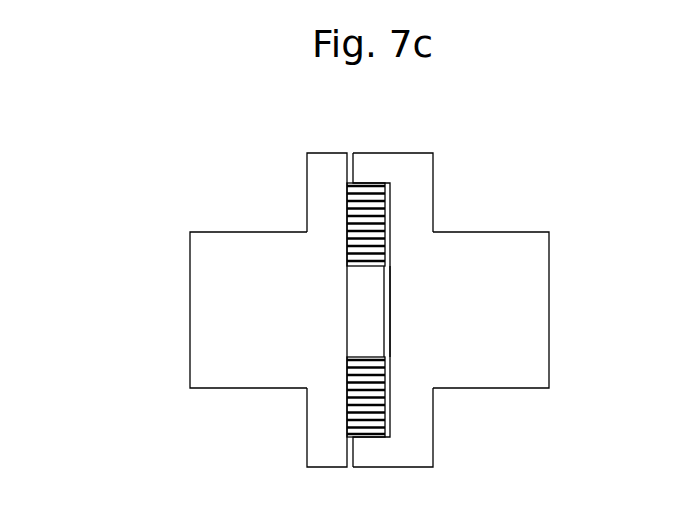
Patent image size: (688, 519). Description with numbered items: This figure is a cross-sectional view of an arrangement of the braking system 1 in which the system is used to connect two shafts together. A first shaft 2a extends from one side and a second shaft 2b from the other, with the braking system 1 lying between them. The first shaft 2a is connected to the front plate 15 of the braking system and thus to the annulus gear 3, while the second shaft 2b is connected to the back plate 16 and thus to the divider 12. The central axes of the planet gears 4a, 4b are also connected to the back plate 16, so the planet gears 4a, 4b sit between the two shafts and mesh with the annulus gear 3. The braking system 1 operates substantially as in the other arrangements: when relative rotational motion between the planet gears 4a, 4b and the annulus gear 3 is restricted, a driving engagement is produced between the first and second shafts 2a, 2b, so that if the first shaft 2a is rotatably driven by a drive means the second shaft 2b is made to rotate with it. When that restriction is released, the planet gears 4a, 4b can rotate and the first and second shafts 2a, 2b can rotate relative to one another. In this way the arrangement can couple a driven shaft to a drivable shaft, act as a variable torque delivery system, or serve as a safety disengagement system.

The braking system 1 is at (377, 301).
The first shaft 2a is at (527, 307).
The second shaft 2b is at (238, 313).
The annulus gear 3 is at (375, 165).
The planet gear 4a is at (357, 215).
The planet gear 4b is at (364, 398).
The divider 12 is at (358, 297).
The front plate 15 is at (420, 184).
The back plate 16 is at (318, 168).